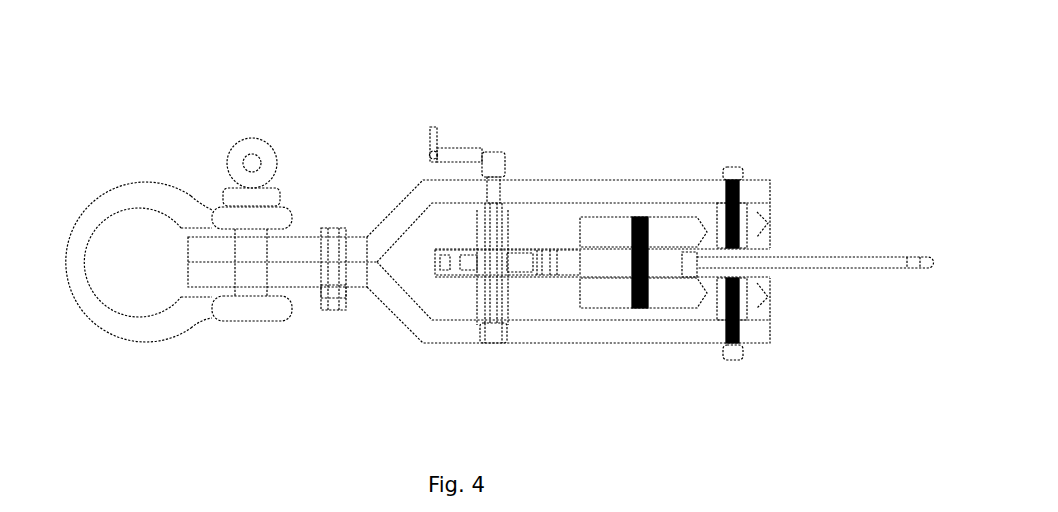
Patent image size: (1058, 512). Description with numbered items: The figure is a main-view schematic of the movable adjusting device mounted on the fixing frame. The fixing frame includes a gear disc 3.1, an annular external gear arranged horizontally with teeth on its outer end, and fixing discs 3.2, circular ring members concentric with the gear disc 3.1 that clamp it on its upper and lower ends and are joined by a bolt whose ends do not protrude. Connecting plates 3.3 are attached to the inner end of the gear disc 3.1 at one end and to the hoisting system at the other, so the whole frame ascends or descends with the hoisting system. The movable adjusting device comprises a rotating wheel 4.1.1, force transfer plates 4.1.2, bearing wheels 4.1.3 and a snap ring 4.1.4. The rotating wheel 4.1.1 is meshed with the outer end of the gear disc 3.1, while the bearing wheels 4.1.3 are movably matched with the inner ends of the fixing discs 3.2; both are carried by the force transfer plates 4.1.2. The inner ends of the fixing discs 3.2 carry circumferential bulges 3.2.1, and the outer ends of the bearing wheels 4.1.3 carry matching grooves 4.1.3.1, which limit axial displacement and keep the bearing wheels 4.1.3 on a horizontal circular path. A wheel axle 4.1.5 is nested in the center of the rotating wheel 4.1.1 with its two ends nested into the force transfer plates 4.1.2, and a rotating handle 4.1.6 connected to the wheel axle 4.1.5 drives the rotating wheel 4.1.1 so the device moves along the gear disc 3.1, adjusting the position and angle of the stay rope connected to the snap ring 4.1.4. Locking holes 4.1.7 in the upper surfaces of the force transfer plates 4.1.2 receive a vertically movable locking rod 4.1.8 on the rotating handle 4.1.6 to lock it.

The snap ring 4.1.4 is at (98, 205).
The rotating wheel 4.1.1 is at (432, 248).
The force transfer plates 4.1.2 is at (605, 177).
The locking holes 4.1.7 is at (553, 177).
The rotating handle 4.1.6 is at (502, 147).
The wheel axle 4.1.5 is at (478, 303).
The locking rod 4.1.8 is at (435, 127).
The bearing wheels 4.1.3 is at (757, 288).
The grooves 4.1.3.1 is at (707, 300).
The gear disc 3.1 is at (585, 262).
The fixing discs 3.2 is at (677, 292).
The bulges 3.2.1 is at (707, 300).
The connecting plates 3.3 is at (878, 263).